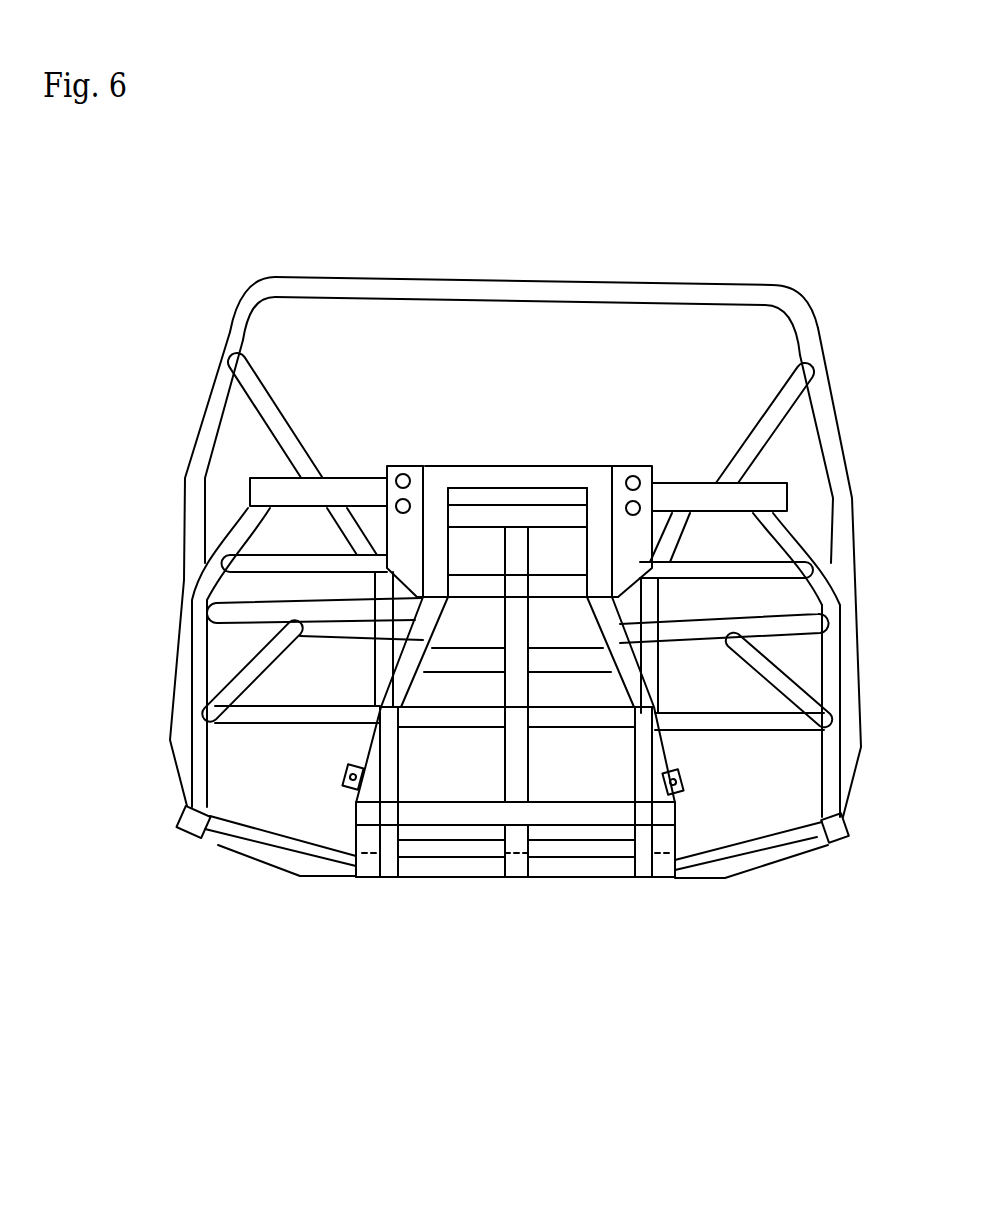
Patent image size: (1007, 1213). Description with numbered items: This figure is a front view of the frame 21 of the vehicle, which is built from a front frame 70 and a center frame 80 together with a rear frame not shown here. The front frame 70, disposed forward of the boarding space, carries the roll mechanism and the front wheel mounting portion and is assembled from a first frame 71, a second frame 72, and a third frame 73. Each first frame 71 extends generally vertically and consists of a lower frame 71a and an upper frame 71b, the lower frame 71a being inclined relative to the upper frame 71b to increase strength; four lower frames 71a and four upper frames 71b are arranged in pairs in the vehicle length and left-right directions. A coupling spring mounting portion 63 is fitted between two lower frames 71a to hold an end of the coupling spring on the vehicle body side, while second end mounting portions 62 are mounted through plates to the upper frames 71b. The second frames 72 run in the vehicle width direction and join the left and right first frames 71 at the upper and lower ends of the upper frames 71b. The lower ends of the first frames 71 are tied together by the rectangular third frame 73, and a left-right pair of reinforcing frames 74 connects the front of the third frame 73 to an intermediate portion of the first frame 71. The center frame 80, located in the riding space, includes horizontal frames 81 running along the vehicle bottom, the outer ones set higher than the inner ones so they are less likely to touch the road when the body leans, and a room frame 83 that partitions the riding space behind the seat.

The frame 21 is at (155, 255).
The room frame 83 is at (527, 290).
The front frame 70 is at (483, 440).
The second end mounting portion 62 is at (414, 468).
The second frame 72 is at (567, 583).
The first frame 71 is at (96, 538).
The lower frame 71a is at (425, 607).
The upper frame 71b is at (440, 537).
The coupling spring mounting portion 63 is at (345, 775).
The third frame 73 is at (427, 813).
The reinforcing frame 74 is at (640, 788).
The center frame 80 is at (232, 868).
The horizontal frame 81 is at (188, 838).